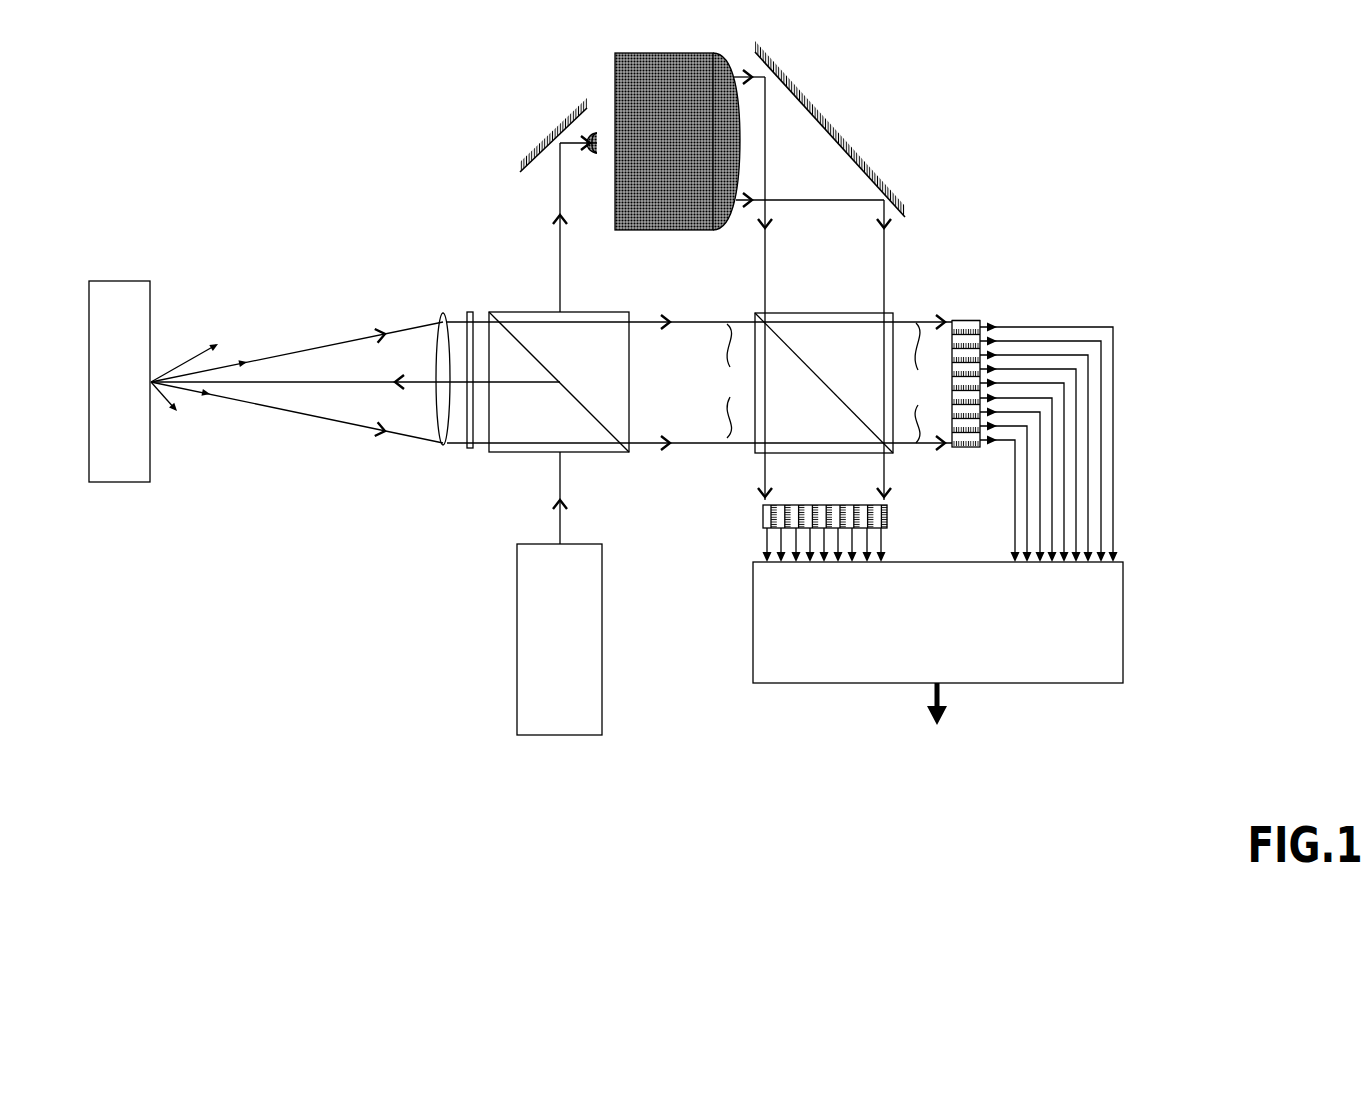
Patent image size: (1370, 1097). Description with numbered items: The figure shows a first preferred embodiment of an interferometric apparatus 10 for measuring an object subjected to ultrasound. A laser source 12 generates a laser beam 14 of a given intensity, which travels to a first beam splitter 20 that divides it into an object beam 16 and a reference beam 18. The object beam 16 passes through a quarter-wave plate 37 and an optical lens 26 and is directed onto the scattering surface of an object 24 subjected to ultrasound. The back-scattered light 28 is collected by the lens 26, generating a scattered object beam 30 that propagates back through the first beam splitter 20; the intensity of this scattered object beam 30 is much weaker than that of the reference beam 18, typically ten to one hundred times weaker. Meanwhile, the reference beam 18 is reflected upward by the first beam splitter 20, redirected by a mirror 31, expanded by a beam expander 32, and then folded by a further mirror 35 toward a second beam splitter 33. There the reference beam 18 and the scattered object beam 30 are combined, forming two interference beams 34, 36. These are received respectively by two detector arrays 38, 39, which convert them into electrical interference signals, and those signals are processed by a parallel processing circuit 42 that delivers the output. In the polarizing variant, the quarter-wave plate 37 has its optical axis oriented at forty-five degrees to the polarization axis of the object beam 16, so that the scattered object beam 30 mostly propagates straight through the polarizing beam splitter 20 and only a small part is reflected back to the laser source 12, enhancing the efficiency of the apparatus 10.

The interferometric apparatus 10 is at (1037, 160).
The laser source 12 is at (540, 616).
The laser beam 14 is at (560, 475).
The object beam 16 is at (388, 380).
The reference beam 18 is at (560, 283).
The first beam splitter 20 is at (542, 423).
The object 24 is at (129, 458).
The optical lens 26 is at (440, 445).
The back-scattered light 28 is at (341, 338).
The scattered object beam 30 is at (699, 382).
The mirror 31 is at (565, 118).
The beam expander 32 is at (677, 53).
The second beam splitter 33 is at (853, 337).
The interference beam 34 is at (922, 382).
The mirror 35 is at (812, 103).
The interference beam 36 is at (880, 472).
The quarter-wave plate 37 is at (470, 432).
The detector array 38 is at (965, 325).
The detector array 39 is at (760, 520).
The parallel processing circuit 42 is at (1100, 628).